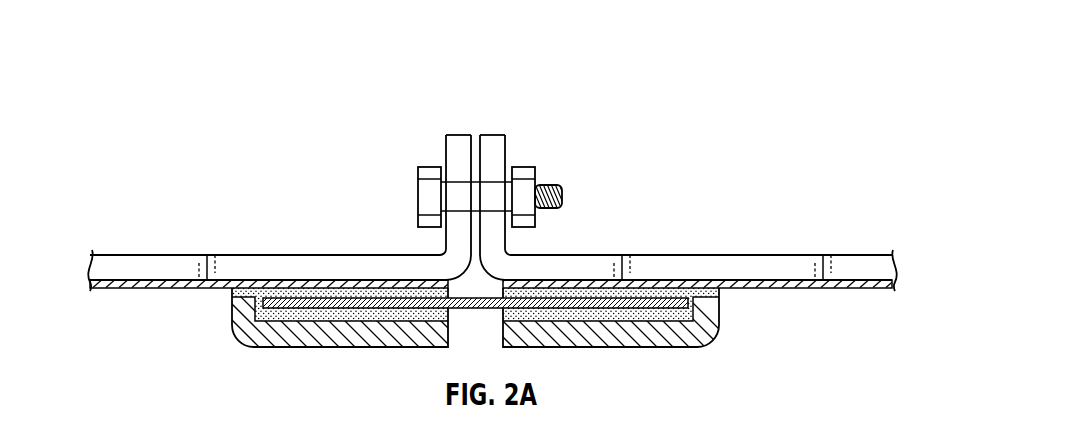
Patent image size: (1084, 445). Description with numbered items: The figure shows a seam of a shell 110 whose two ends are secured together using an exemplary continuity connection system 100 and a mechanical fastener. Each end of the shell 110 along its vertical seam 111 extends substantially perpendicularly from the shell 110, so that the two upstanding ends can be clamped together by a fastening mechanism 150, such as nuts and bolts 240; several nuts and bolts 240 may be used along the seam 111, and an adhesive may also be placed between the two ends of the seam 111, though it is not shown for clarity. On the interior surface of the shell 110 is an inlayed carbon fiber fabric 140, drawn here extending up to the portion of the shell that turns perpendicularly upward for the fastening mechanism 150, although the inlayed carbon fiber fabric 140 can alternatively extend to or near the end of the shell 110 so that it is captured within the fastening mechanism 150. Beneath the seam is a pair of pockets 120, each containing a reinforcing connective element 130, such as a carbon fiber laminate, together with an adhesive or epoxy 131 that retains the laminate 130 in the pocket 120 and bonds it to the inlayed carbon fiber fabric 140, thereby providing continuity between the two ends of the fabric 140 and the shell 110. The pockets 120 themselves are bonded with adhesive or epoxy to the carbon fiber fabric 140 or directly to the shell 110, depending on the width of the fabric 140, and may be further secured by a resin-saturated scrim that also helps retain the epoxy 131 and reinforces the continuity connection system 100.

The continuity connection system 100 is at (624, 120).
The shell 110 is at (152, 254).
The vertical seam 111 is at (476, 255).
The pocket 120 is at (707, 340).
The reinforcing connective element 130 is at (642, 313).
The adhesive or epoxy 131 is at (330, 320).
The inlayed carbon fiber fabric 140 is at (168, 289).
The fastening mechanism 150 is at (417, 197).
The nuts and bolts 240 is at (534, 216).